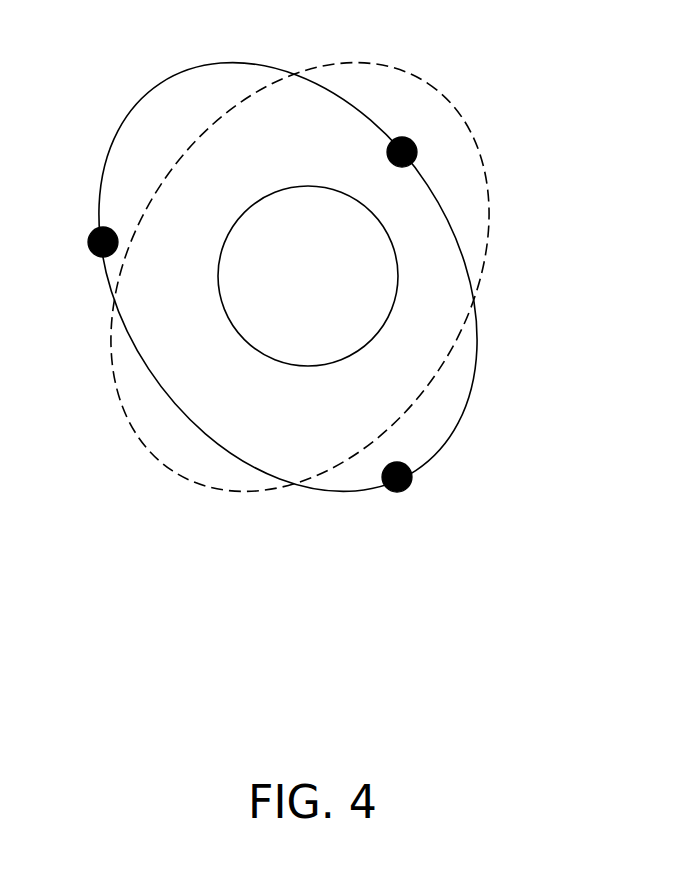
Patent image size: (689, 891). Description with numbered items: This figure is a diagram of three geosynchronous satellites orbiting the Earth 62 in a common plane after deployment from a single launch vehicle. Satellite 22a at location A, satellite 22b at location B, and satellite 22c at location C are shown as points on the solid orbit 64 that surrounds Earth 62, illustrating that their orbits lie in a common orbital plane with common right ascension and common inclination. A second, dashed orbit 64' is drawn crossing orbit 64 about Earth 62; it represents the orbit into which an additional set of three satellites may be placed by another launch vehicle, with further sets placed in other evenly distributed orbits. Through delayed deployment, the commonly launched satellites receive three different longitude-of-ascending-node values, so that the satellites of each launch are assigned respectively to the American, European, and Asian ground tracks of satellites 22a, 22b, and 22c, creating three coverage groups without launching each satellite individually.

The orbit 64 is at (290, 281).
The orbit 64' is at (300, 281).
The Earth 62 is at (332, 335).
The satellite 22a is at (74, 242).
The satellite 22b is at (396, 497).
The satellite 22c is at (374, 153).